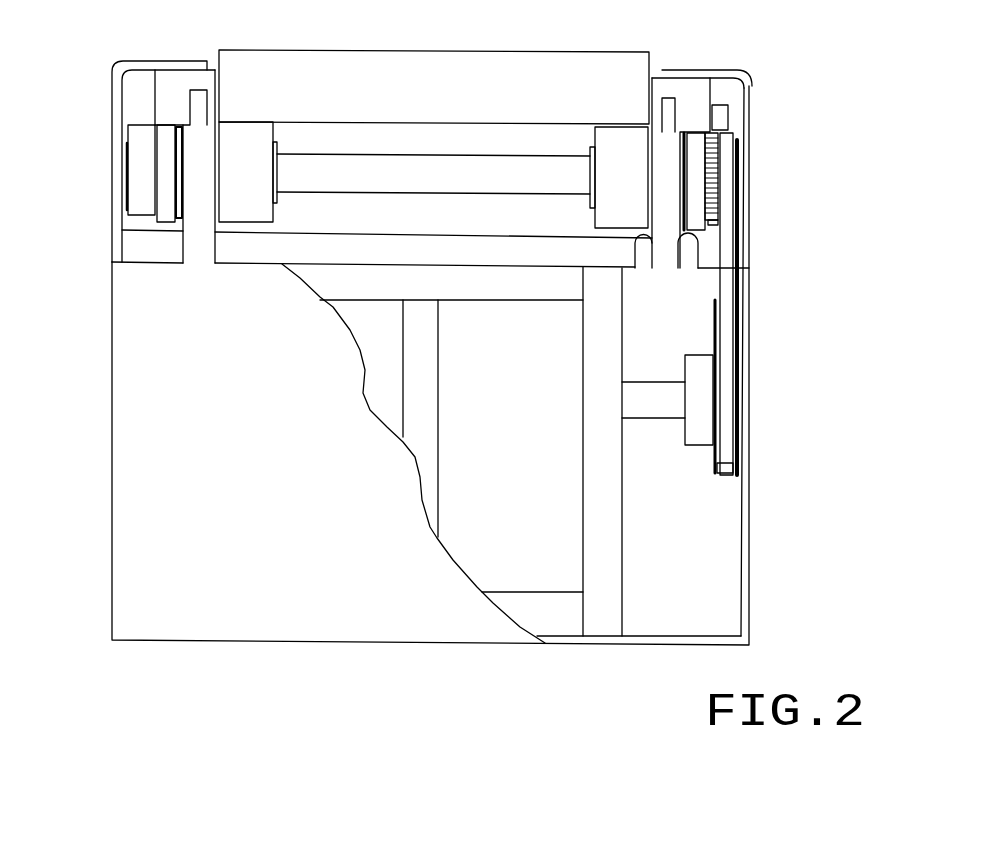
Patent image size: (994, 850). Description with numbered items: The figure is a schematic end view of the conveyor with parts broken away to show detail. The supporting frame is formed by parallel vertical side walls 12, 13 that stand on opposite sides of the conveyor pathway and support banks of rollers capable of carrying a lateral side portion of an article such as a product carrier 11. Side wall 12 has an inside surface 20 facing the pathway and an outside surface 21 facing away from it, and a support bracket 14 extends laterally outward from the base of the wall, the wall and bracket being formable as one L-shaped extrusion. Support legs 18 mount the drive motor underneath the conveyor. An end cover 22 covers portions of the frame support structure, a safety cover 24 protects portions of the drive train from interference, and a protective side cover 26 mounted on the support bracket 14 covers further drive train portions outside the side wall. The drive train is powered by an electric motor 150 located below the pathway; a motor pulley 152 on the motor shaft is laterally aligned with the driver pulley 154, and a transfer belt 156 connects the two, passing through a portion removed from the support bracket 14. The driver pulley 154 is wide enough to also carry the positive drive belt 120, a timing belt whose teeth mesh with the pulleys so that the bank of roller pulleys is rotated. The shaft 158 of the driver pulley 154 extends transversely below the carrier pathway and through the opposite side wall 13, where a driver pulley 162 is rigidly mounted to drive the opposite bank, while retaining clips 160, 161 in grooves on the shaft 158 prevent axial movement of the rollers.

The product carrier 11 is at (434, 109).
The side wall 12 is at (662, 258).
The side wall 13 is at (199, 245).
The support bracket 14 is at (705, 262).
The support legs 18 is at (603, 583).
The inside surface 20 is at (638, 250).
The outside surface 21 is at (689, 255).
The end cover 22 is at (245, 537).
The safety cover 24 is at (748, 500).
The protective side cover 26 is at (745, 122).
The positive drive belt 120 is at (697, 147).
The electric motor 150 is at (522, 472).
The motor pulley 152 is at (712, 453).
The driver pulley 154 is at (708, 166).
The transfer belt 156 is at (725, 307).
The shaft 158 is at (380, 178).
The retaining clip 160 is at (283, 178).
The retaining clip 161 is at (590, 183).
The driver pulley 162 is at (135, 172).